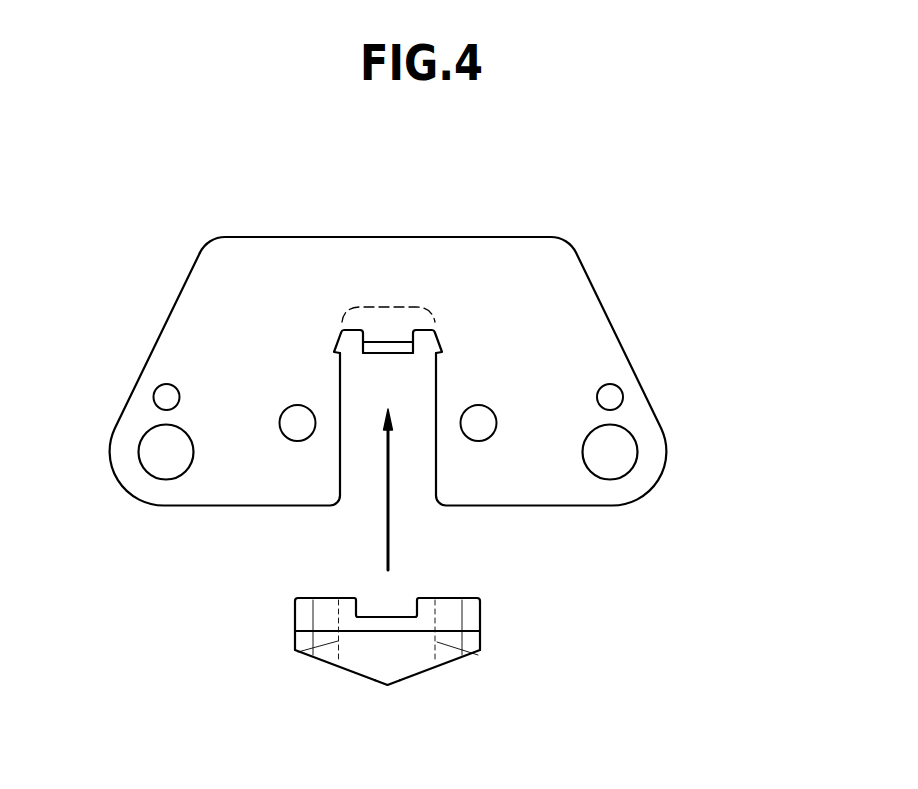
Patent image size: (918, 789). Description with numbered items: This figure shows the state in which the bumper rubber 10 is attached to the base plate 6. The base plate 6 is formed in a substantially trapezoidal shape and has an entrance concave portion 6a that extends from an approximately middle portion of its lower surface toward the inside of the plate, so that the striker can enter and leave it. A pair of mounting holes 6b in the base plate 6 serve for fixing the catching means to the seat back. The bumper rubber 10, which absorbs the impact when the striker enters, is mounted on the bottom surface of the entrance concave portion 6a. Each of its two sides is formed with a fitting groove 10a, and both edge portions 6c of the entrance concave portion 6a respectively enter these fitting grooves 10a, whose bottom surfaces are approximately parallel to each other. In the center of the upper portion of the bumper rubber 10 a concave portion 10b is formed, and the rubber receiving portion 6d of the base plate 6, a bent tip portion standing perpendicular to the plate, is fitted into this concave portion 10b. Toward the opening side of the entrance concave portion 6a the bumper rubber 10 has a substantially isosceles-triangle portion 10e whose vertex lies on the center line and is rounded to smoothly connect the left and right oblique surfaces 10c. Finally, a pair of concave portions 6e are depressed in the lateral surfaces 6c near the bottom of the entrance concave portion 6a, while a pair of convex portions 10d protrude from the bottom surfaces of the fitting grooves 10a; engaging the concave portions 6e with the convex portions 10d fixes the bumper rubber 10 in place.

The base plate 6 is at (666, 320).
The entrance concave portion 6a is at (403, 372).
The mounting holes 6b is at (153, 455).
The edge portions 6c is at (340, 453).
The rubber receiving portion 6d is at (373, 345).
The concave portions 6e is at (335, 351).
The bumper rubber 10 is at (634, 625).
The fitting grooves 10a is at (338, 641).
The concave portion 10b is at (388, 614).
The oblique surfaces 10c is at (328, 667).
The convex portions 10d is at (336, 613).
The substantially isosceles-triangle portion 10e is at (390, 678).